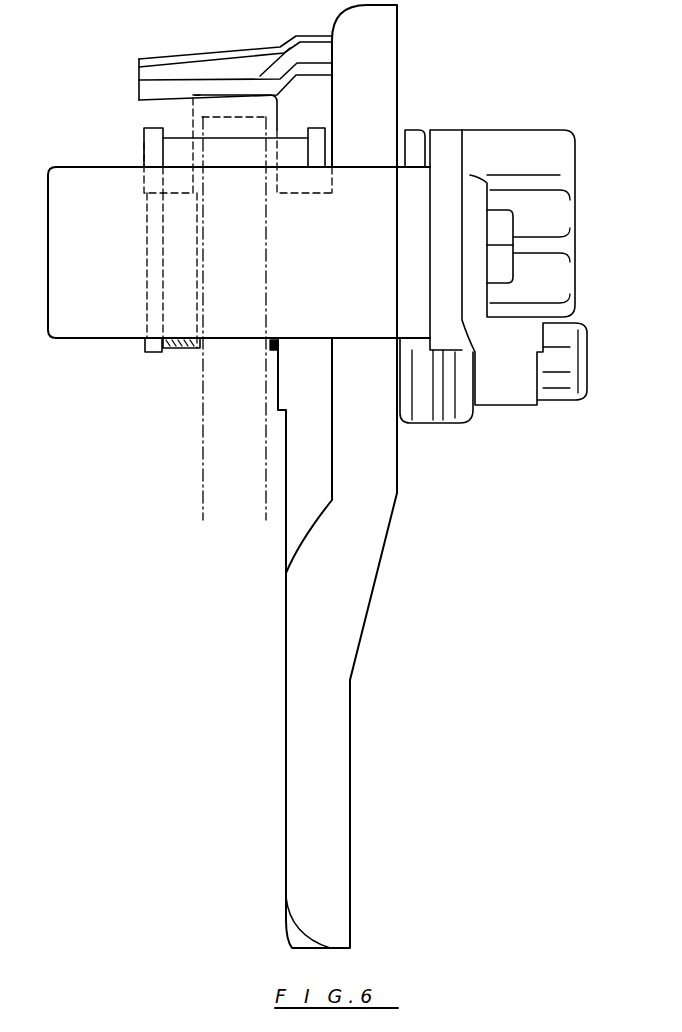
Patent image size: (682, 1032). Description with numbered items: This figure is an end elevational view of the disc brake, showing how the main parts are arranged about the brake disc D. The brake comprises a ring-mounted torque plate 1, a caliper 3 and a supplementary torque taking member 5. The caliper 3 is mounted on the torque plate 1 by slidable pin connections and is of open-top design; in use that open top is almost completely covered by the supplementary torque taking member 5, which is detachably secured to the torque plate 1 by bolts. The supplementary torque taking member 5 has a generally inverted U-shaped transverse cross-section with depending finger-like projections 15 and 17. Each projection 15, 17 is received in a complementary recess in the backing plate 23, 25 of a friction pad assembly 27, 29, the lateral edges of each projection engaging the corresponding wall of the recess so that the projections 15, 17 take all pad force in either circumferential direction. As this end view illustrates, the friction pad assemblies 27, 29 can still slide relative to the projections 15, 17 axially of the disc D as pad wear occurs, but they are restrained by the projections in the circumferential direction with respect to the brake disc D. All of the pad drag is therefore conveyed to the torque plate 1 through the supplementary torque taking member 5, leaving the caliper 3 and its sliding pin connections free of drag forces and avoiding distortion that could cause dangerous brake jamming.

The torque plate 1 is at (336, 645).
The caliper 3 is at (77, 213).
The supplementary torque taking member 5 is at (236, 71).
The finger-like projection 15 is at (298, 92).
The finger-like projection 17 is at (157, 118).
The backing plate 23 is at (153, 355).
The backing plate 25 is at (320, 152).
The friction pad assembly 27 is at (180, 350).
The friction pad assembly 29 is at (272, 348).
The brake disc D is at (204, 442).